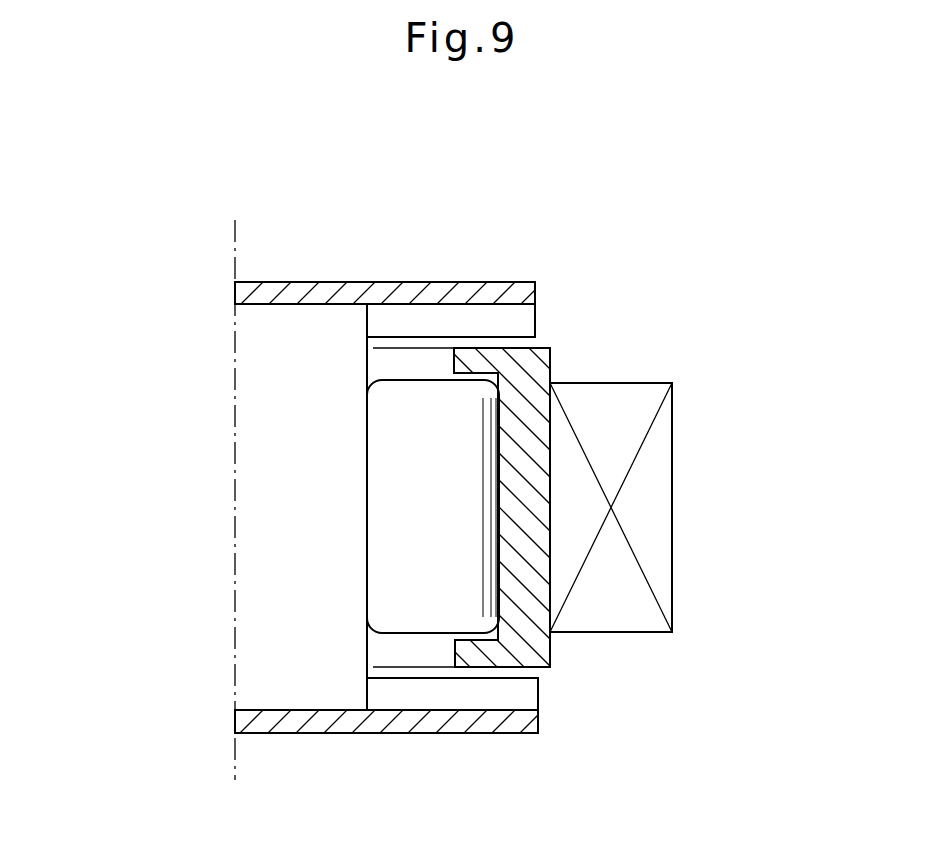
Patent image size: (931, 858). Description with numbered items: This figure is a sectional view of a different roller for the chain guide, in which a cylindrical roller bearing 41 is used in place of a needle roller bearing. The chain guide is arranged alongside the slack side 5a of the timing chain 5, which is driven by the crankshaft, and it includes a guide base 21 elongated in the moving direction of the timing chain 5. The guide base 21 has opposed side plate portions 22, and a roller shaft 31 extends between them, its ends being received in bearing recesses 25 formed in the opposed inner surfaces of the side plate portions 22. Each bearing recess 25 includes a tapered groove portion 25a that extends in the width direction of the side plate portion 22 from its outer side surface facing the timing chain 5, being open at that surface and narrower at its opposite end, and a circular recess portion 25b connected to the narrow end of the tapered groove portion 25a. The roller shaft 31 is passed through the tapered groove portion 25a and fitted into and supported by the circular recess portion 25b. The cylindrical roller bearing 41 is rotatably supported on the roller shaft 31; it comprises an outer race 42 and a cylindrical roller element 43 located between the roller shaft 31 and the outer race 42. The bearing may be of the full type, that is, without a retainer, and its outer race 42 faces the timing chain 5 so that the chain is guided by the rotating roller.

The timing chain 5 is at (672, 400).
The slack side 5a is at (653, 502).
The guide base 21 is at (242, 293).
The side plate portion 22 is at (462, 297).
The bearing recess 25 is at (521, 292).
The tapered groove portion 25a is at (415, 287).
The circular recess portion 25b is at (279, 287).
The roller shaft 31 is at (265, 580).
The cylindrical roller bearing 41 is at (537, 341).
The outer race 42 is at (523, 388).
The cylindrical roller element 43 is at (403, 440).